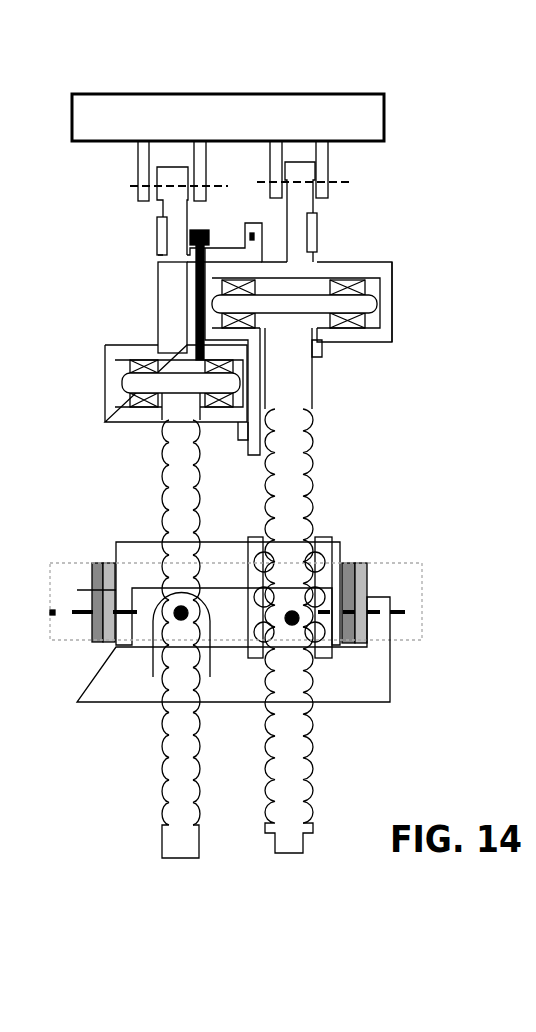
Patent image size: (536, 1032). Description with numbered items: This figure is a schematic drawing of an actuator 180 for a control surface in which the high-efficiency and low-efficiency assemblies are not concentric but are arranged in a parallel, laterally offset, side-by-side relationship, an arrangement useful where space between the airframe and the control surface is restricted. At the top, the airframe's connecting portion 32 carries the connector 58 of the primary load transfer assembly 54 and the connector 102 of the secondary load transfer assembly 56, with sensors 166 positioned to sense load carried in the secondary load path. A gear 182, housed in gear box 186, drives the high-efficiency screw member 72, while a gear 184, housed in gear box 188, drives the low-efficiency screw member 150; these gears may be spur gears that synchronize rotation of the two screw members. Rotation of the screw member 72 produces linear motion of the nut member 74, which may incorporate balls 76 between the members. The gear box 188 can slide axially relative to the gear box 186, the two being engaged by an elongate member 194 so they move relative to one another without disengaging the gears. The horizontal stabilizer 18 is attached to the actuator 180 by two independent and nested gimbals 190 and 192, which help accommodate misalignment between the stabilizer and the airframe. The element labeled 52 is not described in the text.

The connecting portion 32 is at (373, 112).
The actuator 180 is at (440, 143).
The connector 102 is at (158, 173).
The connector 58 is at (312, 178).
The sensor 166 is at (157, 237).
The elongate member 194 is at (190, 297).
The gear box 186 is at (345, 270).
The gear 182 is at (365, 302).
The primary load transfer assembly 54 is at (435, 332).
The secondary load transfer assembly 56 is at (83, 308).
The gear box 188 is at (107, 348).
The gear 184 is at (130, 387).
The gimbal 190 is at (132, 550).
The nut member 74 is at (328, 538).
The balls 76 is at (318, 562).
The horizontal stabilizer 18 is at (414, 593).
The gimbal 192 is at (100, 675).
The ball joint 52 is at (157, 666).
The screw member 150 is at (180, 767).
The screw member 72 is at (302, 757).